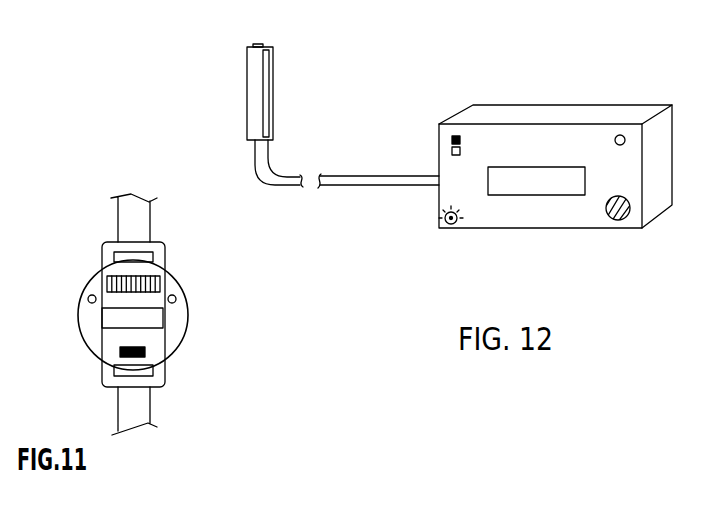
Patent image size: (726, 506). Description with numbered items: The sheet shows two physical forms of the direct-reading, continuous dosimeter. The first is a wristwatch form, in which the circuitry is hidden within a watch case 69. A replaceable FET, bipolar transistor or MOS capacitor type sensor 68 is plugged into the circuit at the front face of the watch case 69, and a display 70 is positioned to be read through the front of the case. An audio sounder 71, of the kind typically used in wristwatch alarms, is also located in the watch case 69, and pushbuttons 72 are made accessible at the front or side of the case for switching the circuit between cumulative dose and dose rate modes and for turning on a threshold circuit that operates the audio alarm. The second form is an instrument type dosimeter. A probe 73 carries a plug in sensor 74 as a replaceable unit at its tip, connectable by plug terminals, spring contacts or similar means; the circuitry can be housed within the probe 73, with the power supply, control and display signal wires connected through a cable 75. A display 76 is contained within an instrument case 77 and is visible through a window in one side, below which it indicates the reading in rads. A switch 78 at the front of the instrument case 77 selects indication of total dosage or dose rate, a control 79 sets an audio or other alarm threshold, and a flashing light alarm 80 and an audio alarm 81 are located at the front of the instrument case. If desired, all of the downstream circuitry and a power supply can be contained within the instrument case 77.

In FIG. 11, the sensor 68 is at (119, 349).
In FIG. 11, the watch case 69 is at (78, 315).
In FIG. 11, the display 70 is at (165, 318).
In FIG. 11, the audio sounder 71 is at (160, 283).
In FIG. 11, the pushbuttons 72 is at (88, 283).
In FIG. 12, the probe 73 is at (250, 92).
In FIG. 12, the plug in sensor 74 is at (265, 45).
In FIG. 12, the cable 75 is at (277, 185).
In FIG. 12, the display 76 is at (567, 167).
In FIG. 12, the instrument case 77 is at (466, 114).
In FIG. 12, the switch 78 is at (450, 140).
In FIG. 12, the control 79 is at (447, 225).
In FIG. 12, the flashing light alarm 80 is at (626, 139).
In FIG. 12, the audio alarm 81 is at (623, 220).